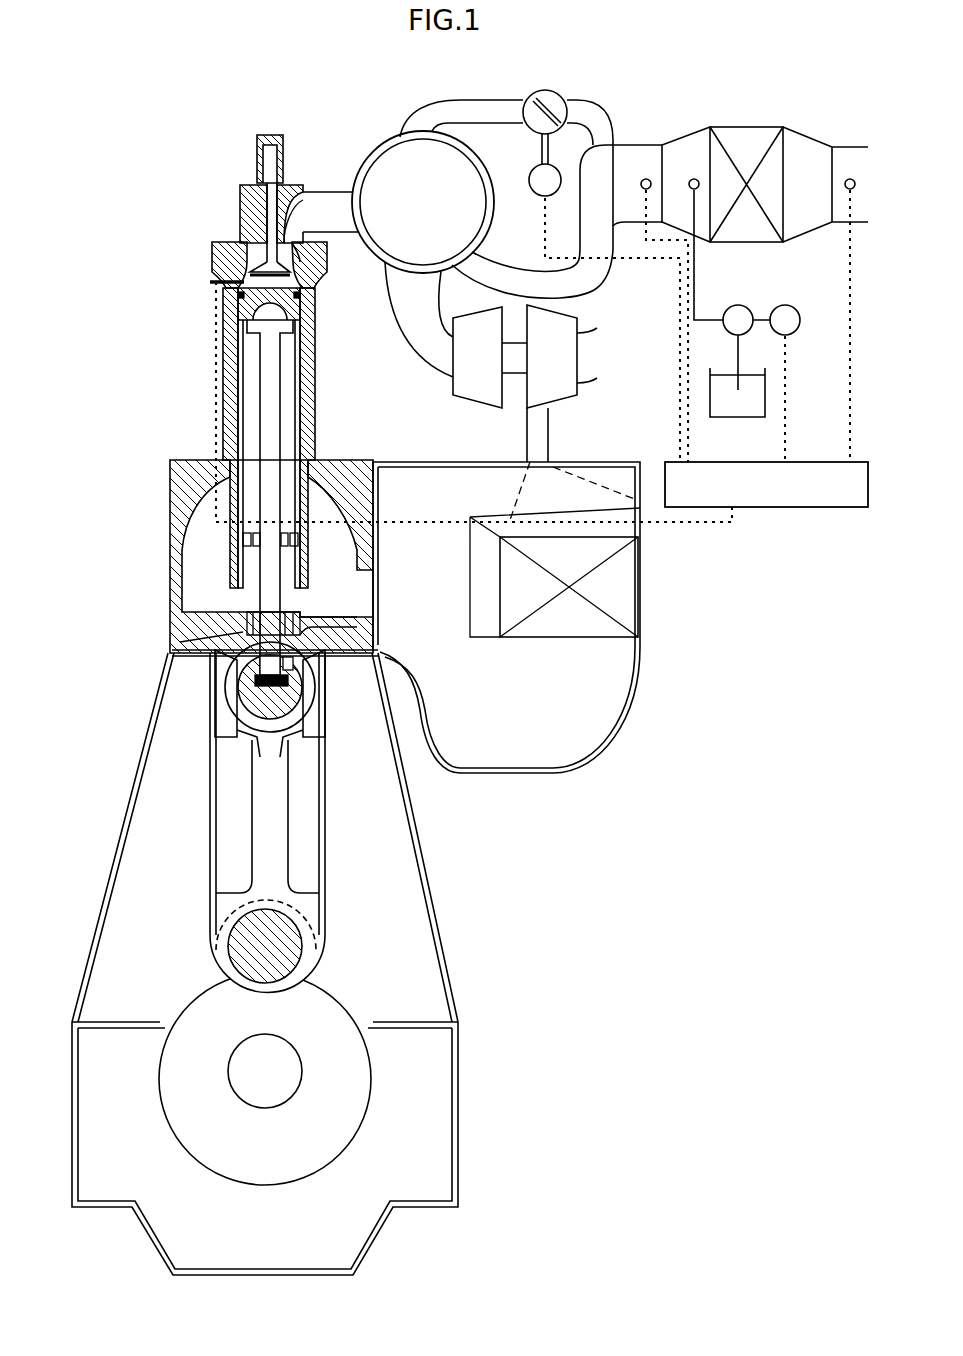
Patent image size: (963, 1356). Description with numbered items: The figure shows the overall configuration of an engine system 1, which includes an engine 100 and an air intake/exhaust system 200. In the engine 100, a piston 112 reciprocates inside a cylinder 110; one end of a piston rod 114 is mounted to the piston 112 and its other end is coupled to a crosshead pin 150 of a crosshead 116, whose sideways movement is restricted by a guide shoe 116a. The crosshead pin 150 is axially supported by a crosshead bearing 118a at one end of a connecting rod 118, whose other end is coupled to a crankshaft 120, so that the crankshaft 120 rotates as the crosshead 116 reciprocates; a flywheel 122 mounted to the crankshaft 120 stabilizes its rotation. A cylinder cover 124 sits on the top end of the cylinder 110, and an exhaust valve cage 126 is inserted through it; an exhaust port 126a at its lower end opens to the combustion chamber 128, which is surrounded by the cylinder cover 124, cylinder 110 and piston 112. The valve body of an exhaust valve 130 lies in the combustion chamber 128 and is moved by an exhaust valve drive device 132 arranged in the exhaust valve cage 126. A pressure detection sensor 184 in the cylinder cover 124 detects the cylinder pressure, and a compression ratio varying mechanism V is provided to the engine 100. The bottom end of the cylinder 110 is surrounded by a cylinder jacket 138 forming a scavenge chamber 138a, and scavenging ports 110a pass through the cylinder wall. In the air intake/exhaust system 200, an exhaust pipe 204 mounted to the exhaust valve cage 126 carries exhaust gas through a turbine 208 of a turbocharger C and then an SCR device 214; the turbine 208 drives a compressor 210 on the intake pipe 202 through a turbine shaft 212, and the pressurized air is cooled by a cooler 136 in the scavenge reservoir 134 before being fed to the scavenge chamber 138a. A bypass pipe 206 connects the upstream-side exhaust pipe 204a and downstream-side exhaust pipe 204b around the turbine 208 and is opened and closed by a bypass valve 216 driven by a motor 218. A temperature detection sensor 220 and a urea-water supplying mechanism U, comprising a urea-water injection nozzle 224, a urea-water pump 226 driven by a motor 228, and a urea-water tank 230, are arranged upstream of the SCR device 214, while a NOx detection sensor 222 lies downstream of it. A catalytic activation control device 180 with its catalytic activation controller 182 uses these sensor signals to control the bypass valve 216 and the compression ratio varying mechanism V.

The engine system 1 is at (222, 84).
The engine 100 is at (90, 131).
The cylinder 110 is at (224, 415).
The scavenging ports 110a is at (292, 545).
The piston 112 is at (243, 345).
The piston rod 114 is at (260, 360).
The crosshead 116 is at (230, 730).
The guide shoe 116a is at (248, 690).
The connecting rod 118 is at (253, 808).
The crosshead bearing 118a is at (292, 705).
The crankshaft 120 is at (200, 1060).
The flywheel 122 is at (160, 1042).
The cylinder cover 124 is at (212, 250).
The exhaust valve cage 126 is at (240, 188).
The exhaust port 126a is at (305, 268).
The combustion chamber 128 is at (298, 306).
The exhaust valve 130 is at (317, 290).
The exhaust valve drive device 132 is at (268, 157).
The scavenge reservoir 134 is at (537, 702).
The cooler 136 is at (641, 620).
The cylinder jacket 138 is at (170, 487).
The scavenge chamber 138a is at (353, 617).
The crosshead pin 150 is at (255, 672).
The catalytic activation control device 180 is at (842, 557).
The catalytic activation controller 182 is at (805, 507).
The pressure detection sensor 184 is at (212, 287).
The air intake/exhaust system 200 is at (392, 104).
The intake pipe 202 is at (548, 444).
The exhaust pipe 204 is at (371, 157).
The upstream-side exhaust pipe 204a is at (413, 372).
The downstream-side exhaust pipe 204b is at (545, 275).
The bypass pipe 206 is at (500, 100).
The turbine 208 is at (478, 404).
The compressor 210 is at (560, 402).
The turbine shaft 212 is at (515, 375).
The SCR device 214 is at (745, 127).
The bypass valve 216 is at (560, 92).
The motor 218 is at (531, 191).
The temperature detection sensor 220 is at (646, 178).
The NOx detection sensor 222 is at (850, 178).
The urea-water injection nozzle 224 is at (694, 178).
The urea-water pump 226 is at (740, 305).
The motor 228 is at (798, 295).
The urea-water tank 230 is at (735, 417).
The turbocharger C is at (582, 305).
The urea-water supplying mechanism U is at (812, 345).
The compression ratio varying mechanism V is at (306, 704).